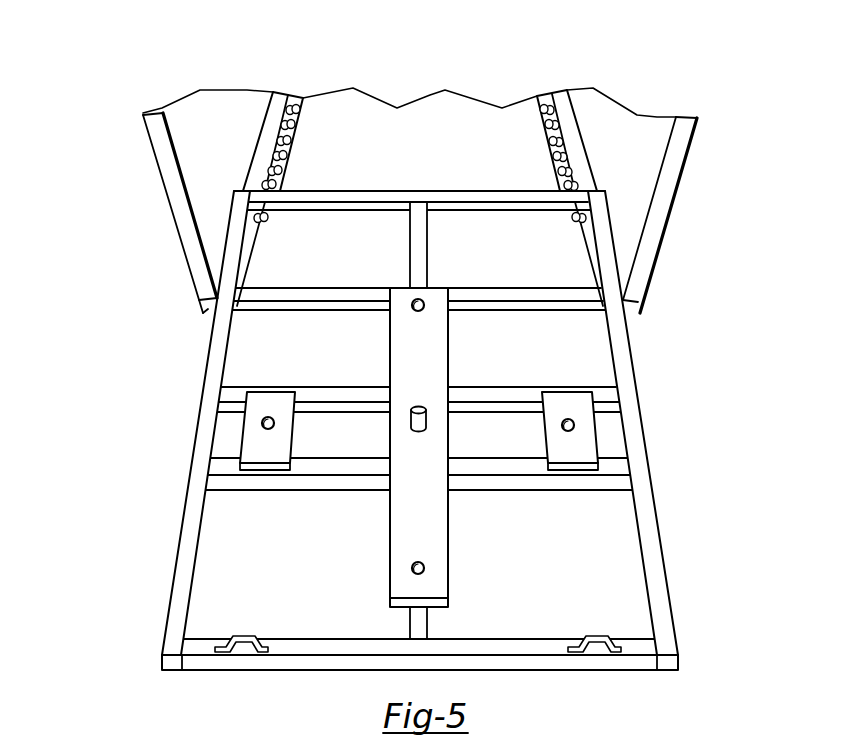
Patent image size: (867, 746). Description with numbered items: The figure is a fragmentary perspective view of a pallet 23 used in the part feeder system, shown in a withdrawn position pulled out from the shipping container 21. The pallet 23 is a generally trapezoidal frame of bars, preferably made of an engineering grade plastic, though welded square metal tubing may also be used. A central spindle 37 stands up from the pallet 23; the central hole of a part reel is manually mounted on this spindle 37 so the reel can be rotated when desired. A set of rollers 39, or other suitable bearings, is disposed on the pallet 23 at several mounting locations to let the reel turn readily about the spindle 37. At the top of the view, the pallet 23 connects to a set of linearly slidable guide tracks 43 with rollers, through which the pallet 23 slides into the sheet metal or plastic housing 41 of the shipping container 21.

The shipping container 21 is at (630, 193).
The pallet 23 is at (655, 595).
The central spindle 37 is at (423, 423).
The rollers 39 is at (420, 300).
The housing 41 is at (190, 165).
The guide tracks 43 is at (277, 98).